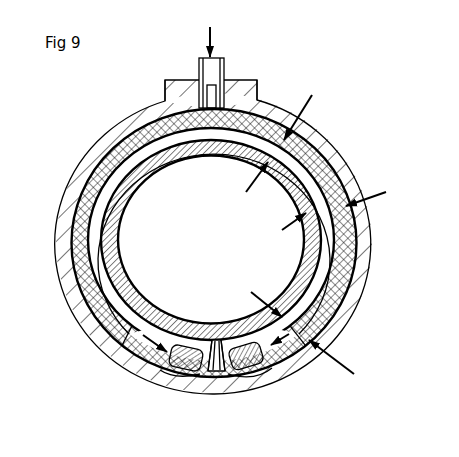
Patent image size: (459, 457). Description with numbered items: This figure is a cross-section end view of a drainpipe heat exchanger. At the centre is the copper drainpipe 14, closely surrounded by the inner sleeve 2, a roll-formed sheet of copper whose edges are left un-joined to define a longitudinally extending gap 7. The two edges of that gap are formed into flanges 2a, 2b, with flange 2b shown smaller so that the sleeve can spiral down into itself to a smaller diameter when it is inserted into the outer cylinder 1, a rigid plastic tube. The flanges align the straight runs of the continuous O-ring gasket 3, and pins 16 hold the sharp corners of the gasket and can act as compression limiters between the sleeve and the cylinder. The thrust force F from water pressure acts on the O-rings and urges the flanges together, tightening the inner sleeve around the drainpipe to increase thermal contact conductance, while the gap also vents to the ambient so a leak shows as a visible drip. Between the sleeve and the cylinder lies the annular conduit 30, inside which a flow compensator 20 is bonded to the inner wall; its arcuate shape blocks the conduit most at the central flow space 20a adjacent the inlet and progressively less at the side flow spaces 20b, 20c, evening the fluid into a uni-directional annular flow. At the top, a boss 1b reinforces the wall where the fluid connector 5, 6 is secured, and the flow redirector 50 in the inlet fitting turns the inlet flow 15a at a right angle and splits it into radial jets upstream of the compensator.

The outer cylinder 1 is at (123, 128).
The boss 1b is at (178, 88).
The inner sleeve 2 is at (218, 240).
The flange 2a is at (210, 367).
The flange 2b is at (231, 370).
The gasket 3 is at (187, 374).
The fluid connector 5 is at (247, 70).
The fluid connector 6 is at (232, 70).
The gap 7 is at (218, 360).
The drainpipe 14 is at (120, 265).
The inlet flow 15a is at (226, 38).
The pins 16 is at (157, 364).
The flow compensator 20 is at (82, 197).
The flow space 20a is at (316, 112).
The flow space 20b is at (384, 193).
The flow space 20c is at (349, 366).
The annular conduit 30 is at (301, 315).
The flow redirector 50 is at (248, 90).
The fluid pressure force F is at (132, 367).